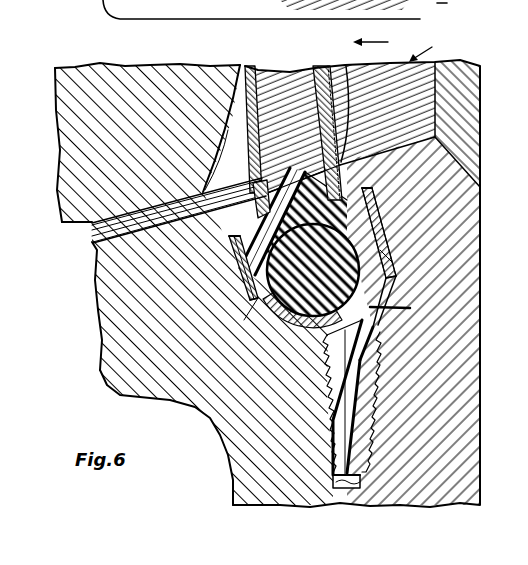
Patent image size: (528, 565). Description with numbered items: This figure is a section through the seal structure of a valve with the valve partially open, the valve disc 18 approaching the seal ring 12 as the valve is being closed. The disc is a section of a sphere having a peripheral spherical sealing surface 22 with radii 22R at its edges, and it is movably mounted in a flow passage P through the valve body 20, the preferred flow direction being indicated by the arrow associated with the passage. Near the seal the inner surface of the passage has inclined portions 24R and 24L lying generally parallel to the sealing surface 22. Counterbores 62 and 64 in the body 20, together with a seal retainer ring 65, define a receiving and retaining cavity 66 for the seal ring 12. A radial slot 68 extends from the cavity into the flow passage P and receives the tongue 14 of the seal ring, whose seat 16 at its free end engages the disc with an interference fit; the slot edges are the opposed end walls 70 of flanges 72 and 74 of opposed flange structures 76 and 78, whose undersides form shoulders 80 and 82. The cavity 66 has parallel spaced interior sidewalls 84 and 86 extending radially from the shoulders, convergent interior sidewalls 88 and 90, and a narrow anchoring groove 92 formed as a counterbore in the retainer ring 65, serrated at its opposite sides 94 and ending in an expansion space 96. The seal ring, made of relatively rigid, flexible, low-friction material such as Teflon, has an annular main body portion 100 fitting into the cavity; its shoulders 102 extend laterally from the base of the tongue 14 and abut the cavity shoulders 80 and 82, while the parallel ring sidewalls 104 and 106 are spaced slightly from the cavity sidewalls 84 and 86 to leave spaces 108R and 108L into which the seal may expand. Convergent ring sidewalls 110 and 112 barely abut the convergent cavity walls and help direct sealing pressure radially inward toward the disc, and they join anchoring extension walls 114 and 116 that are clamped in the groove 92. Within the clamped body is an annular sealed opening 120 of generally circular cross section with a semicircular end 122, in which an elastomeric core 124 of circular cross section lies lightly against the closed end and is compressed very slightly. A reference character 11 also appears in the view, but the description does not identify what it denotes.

The section line 11 is at (430, 47).
The seal ring 12 is at (323, 460).
The tongue 14 is at (240, 120).
The seat 16 is at (272, 75).
The valve disc 18 is at (113, 62).
The valve body 20 is at (106, 374).
The spherical sealing surface 22 is at (92, 232).
The radii 22R is at (222, 162).
The inner surface portion 24L is at (93, 243).
The inner surface portion 24R is at (437, 135).
The counterbore 62 is at (247, 287).
The counterbore 64 is at (395, 240).
The seal retainer ring 65 is at (478, 485).
The cavity 66 is at (246, 298).
The radial slot 68 is at (254, 65).
The end walls 70 is at (232, 74).
The flange 72 is at (220, 176).
The flange 74 is at (338, 72).
The flange structure 76 is at (228, 145).
The flange structure 78 is at (350, 110).
The shoulder 80 is at (230, 238).
The shoulder 82 is at (373, 193).
The interior sidewall 84 is at (233, 250).
The interior sidewall 86 is at (384, 210).
The convergent interior sidewall 88 is at (298, 340).
The convergent interior sidewall 90 is at (385, 328).
The anchoring groove 92 is at (360, 486).
The serrated sides 94 is at (328, 420).
The expansion space 96 is at (333, 487).
The main body portion 100 is at (404, 190).
The shoulders 102 is at (215, 190).
The ring sidewall 104 is at (257, 275).
The ring sidewall 106 is at (400, 280).
The space 108L is at (242, 322).
The space 108R is at (400, 258).
The convergent ring sidewall 110 is at (290, 327).
The convergent ring sidewall 112 is at (378, 342).
The anchoring extension wall 114 is at (330, 436).
The anchoring extension wall 116 is at (365, 412).
The sealed opening 120 is at (408, 309).
The semicircular end 122 is at (392, 228).
The elastomeric core 124 is at (312, 372).
The flow passage P is at (379, 43).